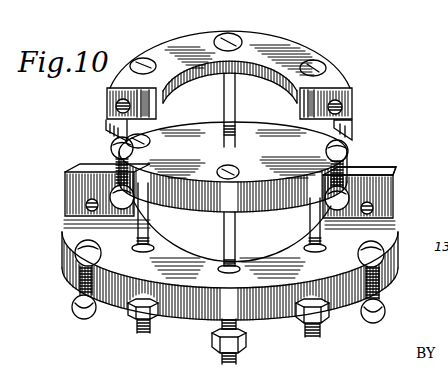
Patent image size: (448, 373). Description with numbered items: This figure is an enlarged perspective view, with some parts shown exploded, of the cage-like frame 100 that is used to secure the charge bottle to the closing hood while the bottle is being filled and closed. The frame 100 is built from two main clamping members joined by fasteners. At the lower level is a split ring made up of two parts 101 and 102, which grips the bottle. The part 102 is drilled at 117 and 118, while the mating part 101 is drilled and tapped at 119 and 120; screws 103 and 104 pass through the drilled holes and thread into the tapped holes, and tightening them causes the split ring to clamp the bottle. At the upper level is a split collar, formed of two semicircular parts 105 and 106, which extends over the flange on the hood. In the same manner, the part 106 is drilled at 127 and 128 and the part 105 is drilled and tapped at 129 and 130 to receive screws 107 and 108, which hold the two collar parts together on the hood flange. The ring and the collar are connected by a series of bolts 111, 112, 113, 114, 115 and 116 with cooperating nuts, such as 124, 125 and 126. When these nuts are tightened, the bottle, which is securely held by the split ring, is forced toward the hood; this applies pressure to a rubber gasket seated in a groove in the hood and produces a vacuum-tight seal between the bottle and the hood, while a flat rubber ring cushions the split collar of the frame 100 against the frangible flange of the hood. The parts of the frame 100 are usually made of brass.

The cage-like frame 100 is at (358, 81).
The split ring part 101 is at (392, 175).
The split ring part 102 is at (394, 223).
The screw 103 is at (78, 293).
The screw 104 is at (382, 293).
The semicircular collar part 105 is at (295, 54).
The semicircular collar part 106 is at (333, 137).
The screw 107 is at (76, 176).
The screw 108 is at (352, 173).
The bolt 111 is at (146, 63).
The bolt 112 is at (240, 40).
The bolt 113 is at (325, 68).
The bolt 114 is at (150, 137).
The bolt 115 is at (240, 163).
The bolt 116 is at (339, 137).
The drilled hole 117 is at (386, 270).
The drilled hole 118 is at (68, 270).
The drilled and tapped hole 119 is at (372, 209).
The drilled and tapped hole 120 is at (68, 208).
The nut 124 is at (131, 314).
The nut 125 is at (240, 348).
The nut 126 is at (326, 313).
The drilled hole 127 is at (345, 152).
The drilled hole 128 is at (110, 155).
The drilled and tapped hole 129 is at (353, 100).
The drilled and tapped hole 130 is at (113, 107).